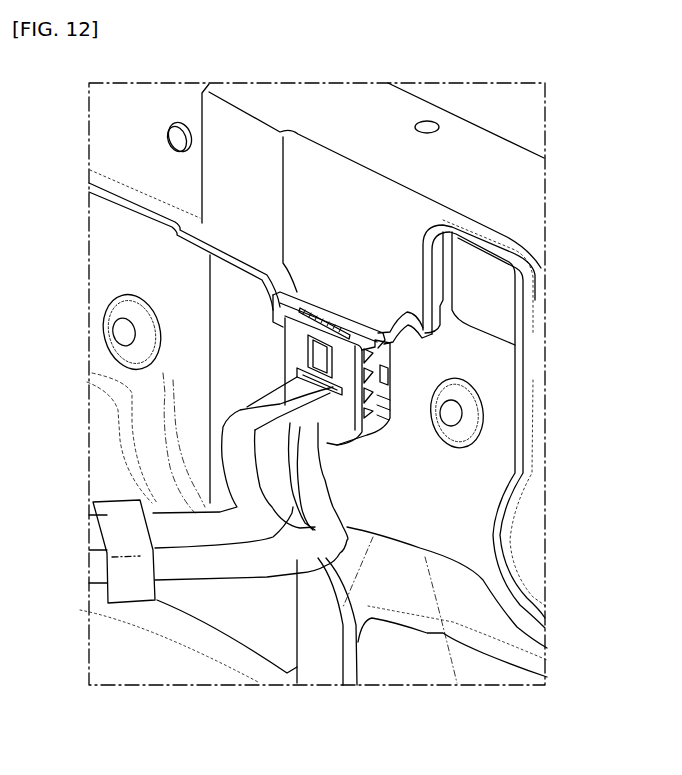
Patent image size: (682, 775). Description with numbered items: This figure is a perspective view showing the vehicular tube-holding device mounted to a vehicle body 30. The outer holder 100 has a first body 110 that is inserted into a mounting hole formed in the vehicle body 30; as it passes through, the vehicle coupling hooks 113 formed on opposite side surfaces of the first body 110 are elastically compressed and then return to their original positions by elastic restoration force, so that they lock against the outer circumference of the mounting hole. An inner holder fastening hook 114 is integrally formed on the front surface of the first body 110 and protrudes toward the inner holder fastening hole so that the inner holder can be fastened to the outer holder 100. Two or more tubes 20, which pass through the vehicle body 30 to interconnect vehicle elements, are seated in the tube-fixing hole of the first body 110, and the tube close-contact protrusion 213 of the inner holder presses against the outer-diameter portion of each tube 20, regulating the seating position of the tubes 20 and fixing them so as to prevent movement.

The tube 20 is at (240, 565).
The vehicle body 30 is at (413, 482).
The outer holder 100 is at (320, 380).
The first body 110 is at (282, 327).
The vehicle coupling hook 113 is at (392, 376).
The inner holder fastening hook 114 is at (312, 347).
The tube close-contact protrusion 213 is at (243, 408).